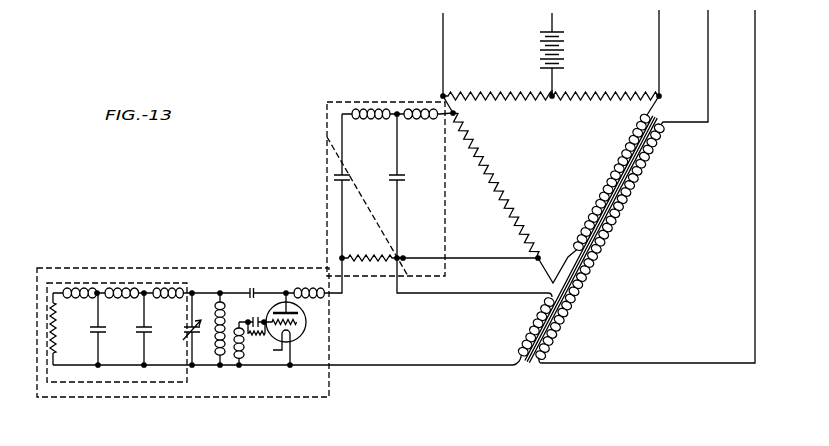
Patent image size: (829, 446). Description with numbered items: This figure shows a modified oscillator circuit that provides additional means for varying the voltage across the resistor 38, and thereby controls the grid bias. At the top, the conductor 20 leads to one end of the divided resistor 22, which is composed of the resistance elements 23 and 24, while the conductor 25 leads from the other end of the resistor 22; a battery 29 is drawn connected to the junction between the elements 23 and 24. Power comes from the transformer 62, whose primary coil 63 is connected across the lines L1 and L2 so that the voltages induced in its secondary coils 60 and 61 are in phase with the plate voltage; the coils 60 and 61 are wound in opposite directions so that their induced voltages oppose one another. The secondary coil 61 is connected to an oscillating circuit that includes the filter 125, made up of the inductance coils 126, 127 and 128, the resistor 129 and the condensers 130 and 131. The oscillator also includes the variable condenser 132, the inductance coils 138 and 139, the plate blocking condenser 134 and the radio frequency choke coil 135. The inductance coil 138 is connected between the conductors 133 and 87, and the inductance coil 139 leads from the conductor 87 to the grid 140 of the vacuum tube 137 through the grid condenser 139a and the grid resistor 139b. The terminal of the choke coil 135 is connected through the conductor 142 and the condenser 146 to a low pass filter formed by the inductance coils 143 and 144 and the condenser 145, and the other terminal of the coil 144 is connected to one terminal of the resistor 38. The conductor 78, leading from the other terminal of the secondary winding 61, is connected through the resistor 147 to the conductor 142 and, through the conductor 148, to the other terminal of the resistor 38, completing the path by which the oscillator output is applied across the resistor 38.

The conductor 20 is at (444, 37).
The divided resistor 22 is at (555, 104).
The resistance element 23 is at (503, 95).
The resistance element 24 is at (605, 95).
The conductor 25 is at (660, 40).
The battery 29 is at (564, 32).
The resistor 38 is at (505, 197).
The coil 60 is at (600, 197).
The secondary coil 61 is at (530, 330).
The transformer 62 is at (517, 362).
The primary coil 63 is at (605, 247).
The conductor 78 is at (437, 293).
The conductor 87 is at (395, 365).
The filter 125 is at (130, 382).
The inductance coil 126 is at (60, 292).
The inductance coil 127 is at (100, 292).
The inductance coil 128 is at (153, 292).
The resistor 129 is at (56, 350).
The condenser 130 is at (92, 326).
The condenser 131 is at (139, 334).
The variable condenser 132 is at (184, 326).
The conductor 133 is at (229, 293).
The plate blocking condenser 134 is at (251, 287).
The radio frequency choke coil 135 is at (305, 292).
The vacuum tube 137 is at (305, 333).
The inductance coil 138 is at (218, 302).
The inductance coil 139 is at (237, 357).
The grid condenser 139a is at (253, 317).
The grid resistor 139b is at (258, 338).
The grid 140 is at (300, 323).
The conductor 142 is at (343, 203).
The inductance coil 143 is at (355, 113).
The inductance coil 144 is at (413, 113).
The condenser 145 is at (400, 178).
The condenser 146 is at (337, 175).
The resistor 147 is at (362, 257).
The conductor 148 is at (490, 238).
The line L1 is at (692, 66).
The line L2 is at (654, 185).